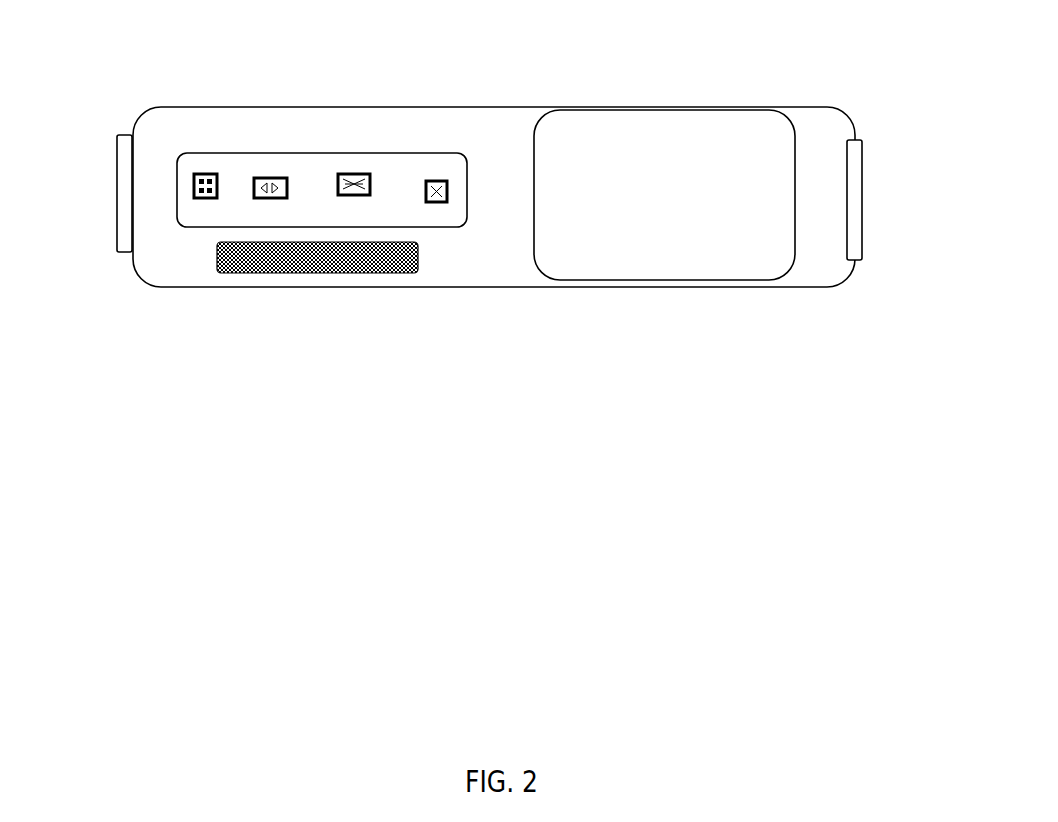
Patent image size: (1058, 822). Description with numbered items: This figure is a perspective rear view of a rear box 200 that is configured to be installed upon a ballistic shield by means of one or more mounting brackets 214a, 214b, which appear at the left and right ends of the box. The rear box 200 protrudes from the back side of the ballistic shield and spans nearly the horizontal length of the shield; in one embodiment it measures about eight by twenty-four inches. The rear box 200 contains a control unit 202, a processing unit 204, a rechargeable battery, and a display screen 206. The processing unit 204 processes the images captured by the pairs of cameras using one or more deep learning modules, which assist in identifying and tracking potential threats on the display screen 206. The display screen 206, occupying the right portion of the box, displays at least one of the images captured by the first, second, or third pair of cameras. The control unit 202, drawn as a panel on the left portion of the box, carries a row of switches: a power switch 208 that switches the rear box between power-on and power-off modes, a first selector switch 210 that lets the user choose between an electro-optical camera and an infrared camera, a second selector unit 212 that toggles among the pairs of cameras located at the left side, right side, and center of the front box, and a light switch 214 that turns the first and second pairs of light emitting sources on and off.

The rear box 200 is at (461, 61).
The control unit 202 is at (467, 154).
The processing unit 204 is at (300, 272).
The display screen 206 is at (790, 112).
The power switch 208 is at (203, 173).
The first selector switch 210 is at (270, 177).
The second selector unit 212 is at (350, 172).
The light switch 214 is at (436, 178).
The mounting bracket 214a is at (117, 190).
The mounting bracket 214b is at (862, 194).